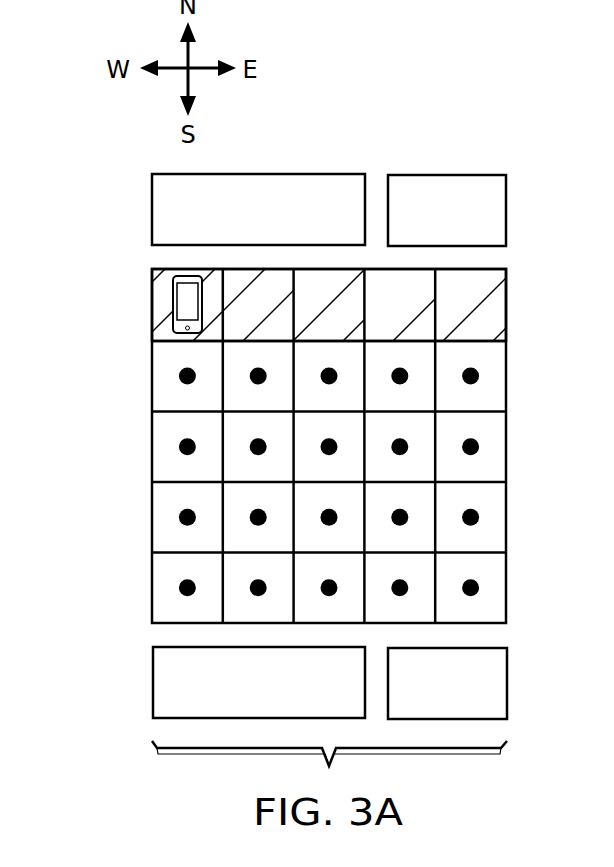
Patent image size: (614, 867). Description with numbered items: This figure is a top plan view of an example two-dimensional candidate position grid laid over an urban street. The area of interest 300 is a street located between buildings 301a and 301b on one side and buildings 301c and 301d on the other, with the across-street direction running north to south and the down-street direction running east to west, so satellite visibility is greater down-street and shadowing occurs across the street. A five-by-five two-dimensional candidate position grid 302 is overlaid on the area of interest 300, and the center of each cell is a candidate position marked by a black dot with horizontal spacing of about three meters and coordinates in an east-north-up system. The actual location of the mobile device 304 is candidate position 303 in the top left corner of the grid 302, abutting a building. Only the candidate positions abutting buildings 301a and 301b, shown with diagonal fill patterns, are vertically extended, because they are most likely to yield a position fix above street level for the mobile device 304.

The area of interest 300 is at (120, 445).
The building 301a is at (152, 211).
The building 301b is at (448, 175).
The building 301c is at (153, 686).
The building 301d is at (507, 682).
The 2D candidate position grid 302 is at (142, 400).
The candidate position 303 is at (162, 311).
The mobile device 304 is at (173, 303).